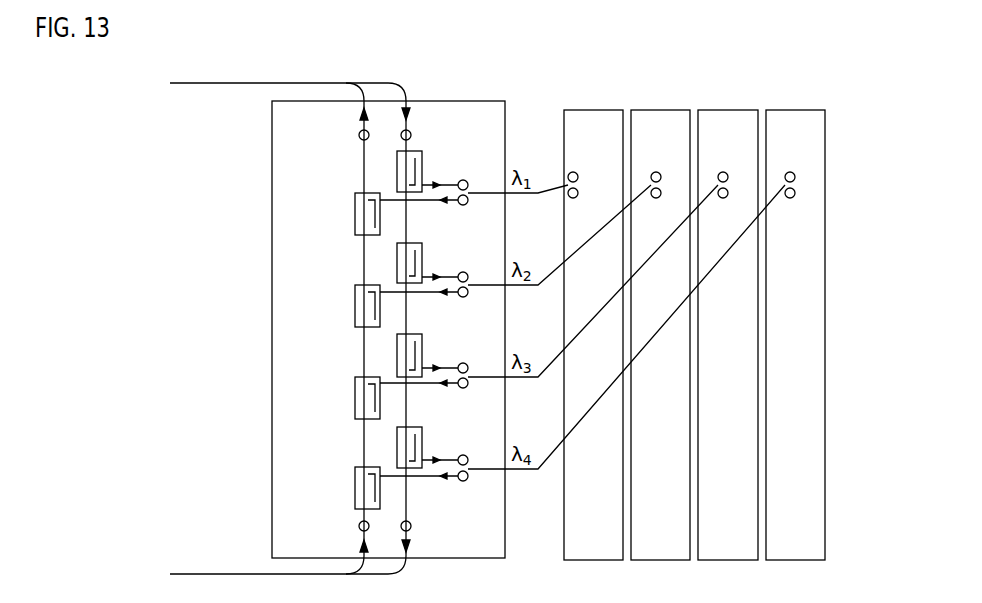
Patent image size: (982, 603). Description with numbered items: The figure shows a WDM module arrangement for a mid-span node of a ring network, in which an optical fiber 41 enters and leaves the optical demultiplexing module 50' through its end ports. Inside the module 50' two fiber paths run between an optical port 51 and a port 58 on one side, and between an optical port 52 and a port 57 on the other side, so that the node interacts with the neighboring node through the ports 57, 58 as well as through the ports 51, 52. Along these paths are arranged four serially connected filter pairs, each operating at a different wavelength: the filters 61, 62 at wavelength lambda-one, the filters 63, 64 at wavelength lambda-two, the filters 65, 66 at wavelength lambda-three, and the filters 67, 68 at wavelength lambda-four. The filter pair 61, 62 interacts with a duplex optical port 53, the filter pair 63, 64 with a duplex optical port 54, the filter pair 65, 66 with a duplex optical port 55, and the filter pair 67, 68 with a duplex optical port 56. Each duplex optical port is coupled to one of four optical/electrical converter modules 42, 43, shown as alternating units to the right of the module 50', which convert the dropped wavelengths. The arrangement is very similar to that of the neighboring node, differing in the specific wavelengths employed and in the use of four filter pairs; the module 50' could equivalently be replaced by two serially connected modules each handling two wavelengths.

The optical fiber 41 is at (218, 84).
The WDM module 50' is at (388, 312).
The optical port 51 is at (358, 135).
The optical port 52 is at (411, 136).
The duplex optical port 53 is at (468, 203).
The duplex optical port 54 is at (468, 295).
The duplex optical port 55 is at (468, 386).
The duplex optical port 56 is at (468, 479).
The port 57 is at (411, 527).
The port 58 is at (359, 526).
The filter 61 is at (397, 180).
The filter 62 is at (355, 216).
The filter 63 is at (397, 272).
The filter 64 is at (355, 310).
The filter 65 is at (397, 362).
The filter 66 is at (355, 403).
The filter 67 is at (397, 452).
The filter 68 is at (355, 493).
The optical/electrical converter module 42 is at (588, 110).
The optical/electrical converter module 43 is at (666, 110).